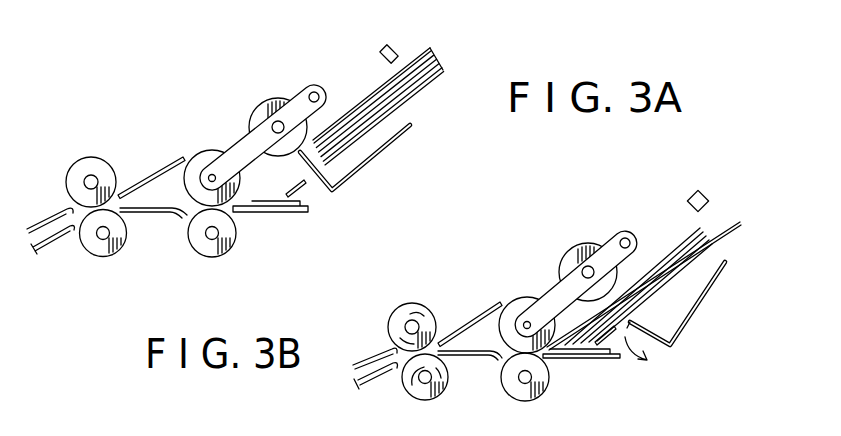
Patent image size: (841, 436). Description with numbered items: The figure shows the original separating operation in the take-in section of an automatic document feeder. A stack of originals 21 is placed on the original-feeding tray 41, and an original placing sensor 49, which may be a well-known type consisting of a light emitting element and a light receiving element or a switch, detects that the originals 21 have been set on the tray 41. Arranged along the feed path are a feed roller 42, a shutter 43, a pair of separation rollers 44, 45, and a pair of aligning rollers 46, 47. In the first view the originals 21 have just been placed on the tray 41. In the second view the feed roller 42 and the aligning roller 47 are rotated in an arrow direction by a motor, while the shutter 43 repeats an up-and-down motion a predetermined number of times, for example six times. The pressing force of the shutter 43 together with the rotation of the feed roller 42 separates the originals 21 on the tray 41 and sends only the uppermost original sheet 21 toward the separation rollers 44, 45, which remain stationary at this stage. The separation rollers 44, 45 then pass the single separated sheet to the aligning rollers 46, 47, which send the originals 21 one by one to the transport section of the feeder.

The originals 21 is at (360, 103).
The original-feeding tray 41 is at (430, 80).
The feed roller 42 is at (259, 109).
The shutter 43 is at (373, 160).
The separation roller 44 is at (206, 158).
The separation roller 45 is at (236, 234).
The aligning roller 46 is at (93, 168).
The aligning roller 47 is at (127, 234).
The original placing sensor 49 is at (397, 50).